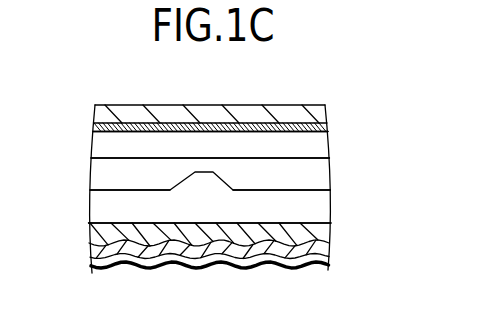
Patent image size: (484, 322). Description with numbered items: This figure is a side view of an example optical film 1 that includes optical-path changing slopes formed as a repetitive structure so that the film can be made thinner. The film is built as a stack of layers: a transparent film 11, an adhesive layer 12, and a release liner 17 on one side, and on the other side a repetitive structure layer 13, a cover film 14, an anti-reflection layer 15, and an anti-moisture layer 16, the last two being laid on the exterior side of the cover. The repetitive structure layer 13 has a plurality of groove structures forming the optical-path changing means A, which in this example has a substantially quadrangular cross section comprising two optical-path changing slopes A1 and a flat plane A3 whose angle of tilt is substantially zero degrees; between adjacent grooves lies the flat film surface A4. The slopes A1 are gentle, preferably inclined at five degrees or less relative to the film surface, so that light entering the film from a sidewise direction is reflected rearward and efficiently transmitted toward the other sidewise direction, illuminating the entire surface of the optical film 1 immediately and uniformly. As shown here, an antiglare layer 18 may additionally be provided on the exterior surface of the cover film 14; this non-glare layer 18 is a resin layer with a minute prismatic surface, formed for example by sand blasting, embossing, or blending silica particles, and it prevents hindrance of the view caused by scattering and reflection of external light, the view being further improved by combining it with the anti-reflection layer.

The optical film 1 is at (73, 128).
The transparent film 11 is at (308, 142).
The adhesive layer 12 is at (315, 130).
The repetitive structure layer 13 is at (315, 170).
The cover film 14 is at (317, 205).
The anti-reflection layer 15 is at (318, 250).
The anti-moisture layer 16 is at (327, 262).
The release liner 17 is at (313, 113).
The antiglare layer 18 is at (320, 233).
The optical-path changing means A is at (197, 196).
The optical-path changing slope A1 is at (178, 190).
The flat plane A3 is at (200, 172).
The film surface A4 is at (262, 190).